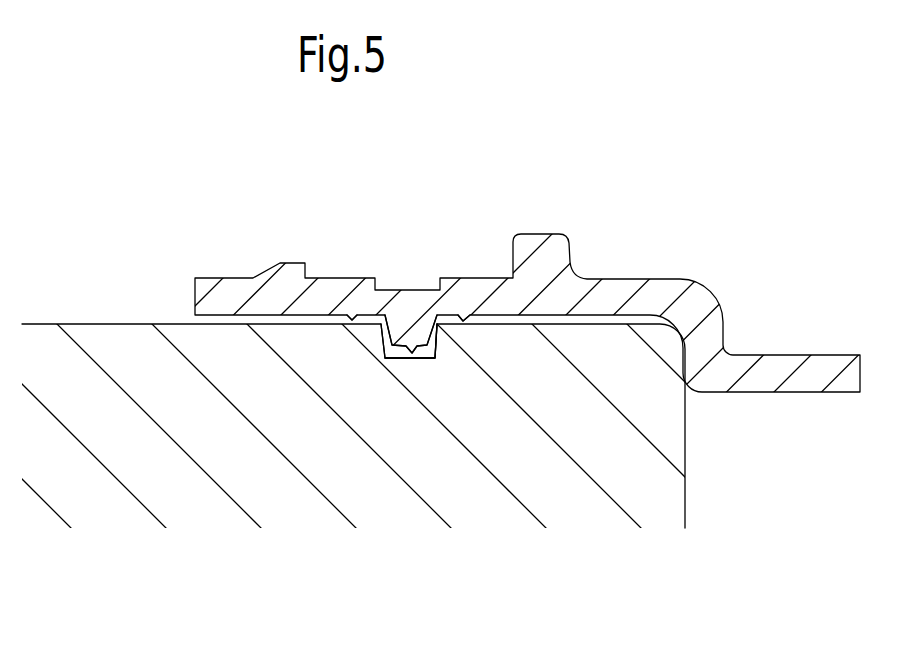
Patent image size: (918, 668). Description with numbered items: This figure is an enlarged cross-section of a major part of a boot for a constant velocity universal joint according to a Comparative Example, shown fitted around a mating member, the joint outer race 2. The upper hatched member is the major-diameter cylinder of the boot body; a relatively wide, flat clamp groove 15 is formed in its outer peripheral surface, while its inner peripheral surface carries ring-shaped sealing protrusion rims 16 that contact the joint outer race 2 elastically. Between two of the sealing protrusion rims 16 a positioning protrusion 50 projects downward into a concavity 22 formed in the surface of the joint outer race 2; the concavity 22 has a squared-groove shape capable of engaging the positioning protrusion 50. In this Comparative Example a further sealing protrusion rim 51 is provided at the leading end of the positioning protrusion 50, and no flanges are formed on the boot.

The joint outer race 2 is at (648, 483).
The clamp groove 15 is at (460, 279).
The sealing protrusion rims 16 is at (353, 317).
The concavity 22 is at (385, 347).
The positioning protrusion 50 is at (412, 353).
The sealing protrusion rim 51 is at (425, 357).